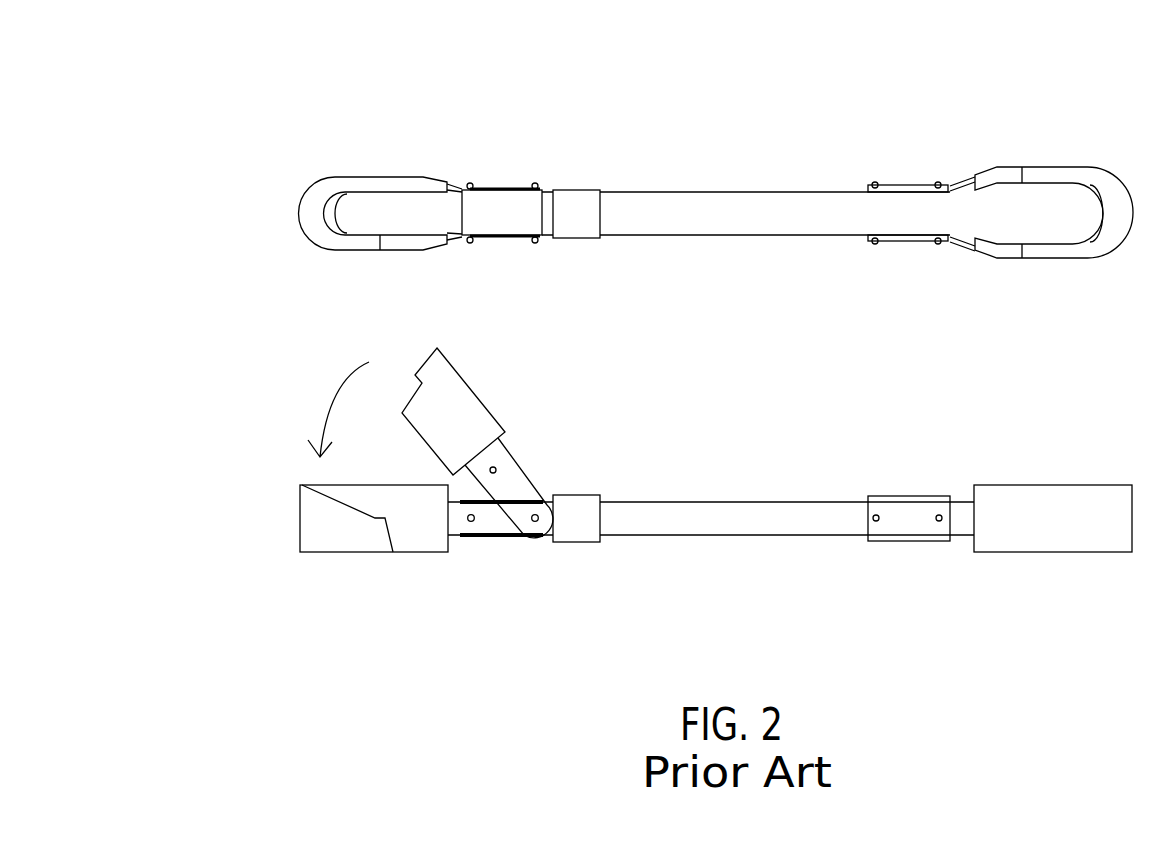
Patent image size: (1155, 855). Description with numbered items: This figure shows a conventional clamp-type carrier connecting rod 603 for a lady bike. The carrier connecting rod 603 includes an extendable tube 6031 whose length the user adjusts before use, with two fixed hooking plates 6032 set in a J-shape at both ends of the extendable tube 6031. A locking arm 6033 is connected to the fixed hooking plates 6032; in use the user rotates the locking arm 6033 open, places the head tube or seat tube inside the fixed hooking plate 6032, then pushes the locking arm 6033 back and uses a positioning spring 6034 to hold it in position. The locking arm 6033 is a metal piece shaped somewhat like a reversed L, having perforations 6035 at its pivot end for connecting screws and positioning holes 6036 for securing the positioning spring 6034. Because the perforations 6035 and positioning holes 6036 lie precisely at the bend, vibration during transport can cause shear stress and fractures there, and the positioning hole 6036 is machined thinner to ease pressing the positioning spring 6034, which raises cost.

The carrier connecting rod 603 is at (287, 110).
The extendable tube 6031 is at (775, 192).
The fixed hooking plate 6032 is at (402, 185).
The locking arm 6033 is at (919, 187).
The positioning spring 6034 is at (473, 522).
The perforation 6035 is at (537, 516).
The positioning hole 6036 is at (493, 470).